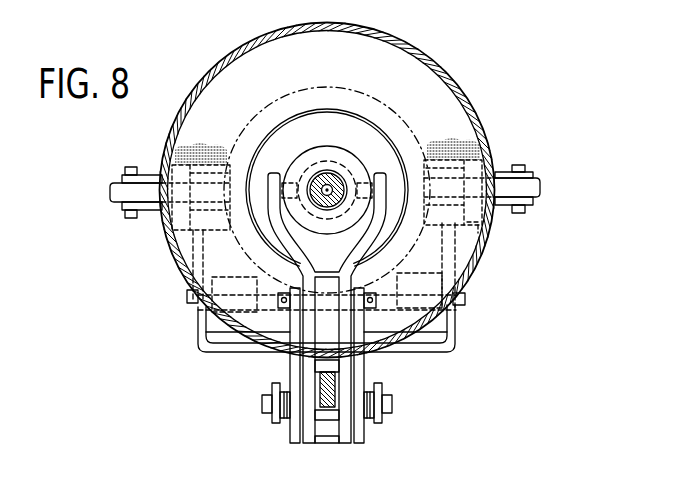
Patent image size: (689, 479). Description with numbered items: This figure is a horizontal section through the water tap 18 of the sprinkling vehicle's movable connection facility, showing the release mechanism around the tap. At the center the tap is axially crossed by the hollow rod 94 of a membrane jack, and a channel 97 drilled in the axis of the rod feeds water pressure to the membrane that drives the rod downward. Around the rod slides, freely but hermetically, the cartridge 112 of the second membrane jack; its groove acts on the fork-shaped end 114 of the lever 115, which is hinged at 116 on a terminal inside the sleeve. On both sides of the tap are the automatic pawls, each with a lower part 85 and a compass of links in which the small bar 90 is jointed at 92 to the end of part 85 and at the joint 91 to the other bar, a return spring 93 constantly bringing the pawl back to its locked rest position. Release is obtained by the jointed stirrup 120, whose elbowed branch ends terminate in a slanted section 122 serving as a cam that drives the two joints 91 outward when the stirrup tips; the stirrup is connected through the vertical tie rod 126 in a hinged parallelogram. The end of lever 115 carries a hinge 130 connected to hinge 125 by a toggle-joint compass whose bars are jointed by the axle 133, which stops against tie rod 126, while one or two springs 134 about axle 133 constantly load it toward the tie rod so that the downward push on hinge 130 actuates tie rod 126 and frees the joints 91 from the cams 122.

The water tap 18 is at (469, 87).
The lower part 85 is at (528, 188).
The small bar 90 is at (528, 206).
The joint 91 is at (470, 230).
The joint 92 is at (523, 167).
The return spring 93 is at (462, 139).
The hollow rod 94 is at (318, 188).
The channel 97 is at (328, 186).
The cartridge 112 is at (348, 163).
The fork-shaped end 114 is at (379, 176).
The lever 115 is at (281, 422).
The hinge 116 is at (285, 300).
The jointed stirrup 120 is at (442, 333).
The slanted section 122 is at (478, 262).
The hinge 125 is at (381, 392).
The vertical tie rod 126 is at (334, 376).
The hinge 130 is at (365, 426).
The axle 133 is at (384, 403).
The spring 134 is at (272, 385).